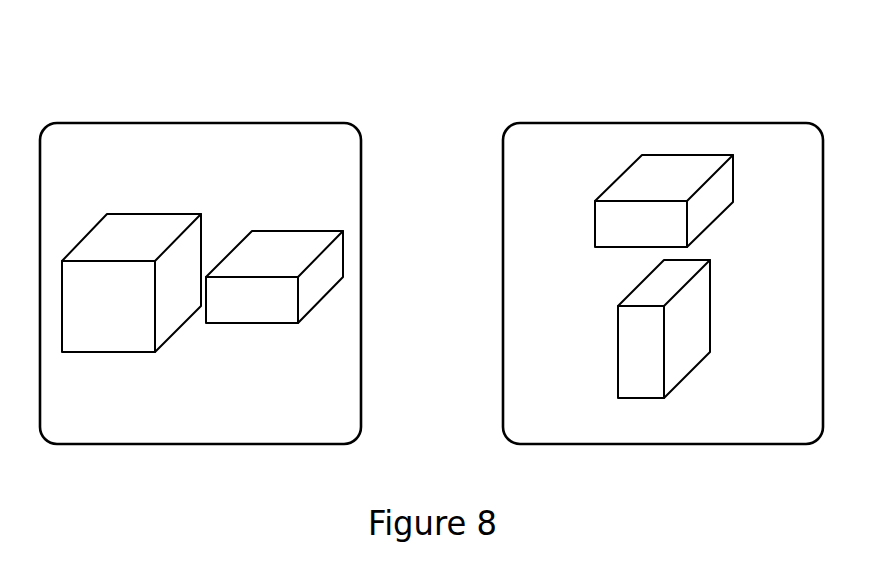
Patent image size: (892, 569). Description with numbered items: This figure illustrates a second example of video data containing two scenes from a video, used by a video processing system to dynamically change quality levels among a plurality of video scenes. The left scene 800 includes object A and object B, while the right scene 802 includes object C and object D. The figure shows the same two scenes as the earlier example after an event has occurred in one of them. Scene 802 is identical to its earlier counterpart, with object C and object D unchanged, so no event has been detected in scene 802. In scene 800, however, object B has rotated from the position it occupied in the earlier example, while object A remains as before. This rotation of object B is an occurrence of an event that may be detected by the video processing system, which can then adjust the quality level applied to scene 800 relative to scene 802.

The scene 800 is at (195, 85).
The scene 802 is at (658, 85).
The object A is at (131, 283).
The object B is at (274, 277).
The object C is at (664, 201).
The object D is at (664, 329).